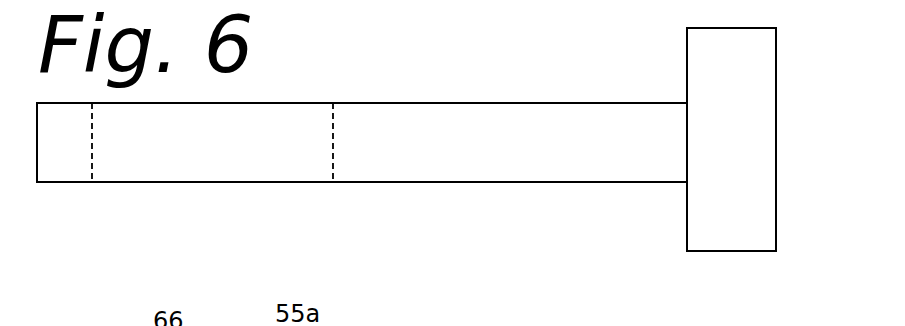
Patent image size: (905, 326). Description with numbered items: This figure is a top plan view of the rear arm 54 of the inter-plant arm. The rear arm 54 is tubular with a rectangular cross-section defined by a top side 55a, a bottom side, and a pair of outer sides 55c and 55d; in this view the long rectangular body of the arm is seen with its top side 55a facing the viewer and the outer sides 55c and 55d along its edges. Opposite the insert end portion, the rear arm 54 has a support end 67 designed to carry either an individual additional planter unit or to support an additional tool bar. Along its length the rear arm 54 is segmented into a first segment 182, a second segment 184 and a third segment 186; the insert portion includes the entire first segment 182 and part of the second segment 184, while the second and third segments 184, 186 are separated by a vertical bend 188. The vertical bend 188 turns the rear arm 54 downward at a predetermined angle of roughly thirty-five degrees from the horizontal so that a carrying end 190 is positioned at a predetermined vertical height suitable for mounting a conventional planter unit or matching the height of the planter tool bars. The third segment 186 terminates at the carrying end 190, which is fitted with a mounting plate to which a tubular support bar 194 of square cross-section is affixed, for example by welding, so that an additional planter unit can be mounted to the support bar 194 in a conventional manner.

The rear arm 54 is at (270, 102).
The top side 55a is at (406, 170).
The outer side 55c is at (483, 101).
The outer side 55d is at (478, 182).
The support end 67 is at (687, 100).
The first segment 182 is at (69, 172).
The second segment 184 is at (194, 170).
The third segment 186 is at (553, 155).
The vertical bend 188 is at (335, 138).
The carrying end 190 is at (687, 150).
The tubular support bar 194 is at (752, 252).